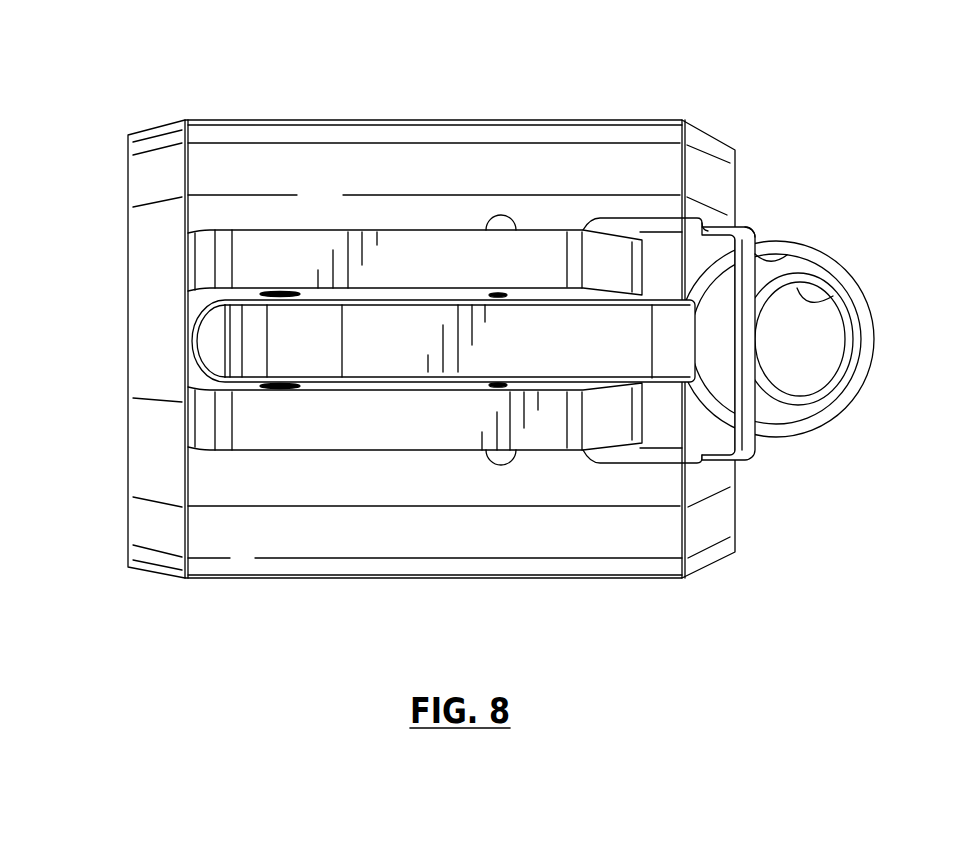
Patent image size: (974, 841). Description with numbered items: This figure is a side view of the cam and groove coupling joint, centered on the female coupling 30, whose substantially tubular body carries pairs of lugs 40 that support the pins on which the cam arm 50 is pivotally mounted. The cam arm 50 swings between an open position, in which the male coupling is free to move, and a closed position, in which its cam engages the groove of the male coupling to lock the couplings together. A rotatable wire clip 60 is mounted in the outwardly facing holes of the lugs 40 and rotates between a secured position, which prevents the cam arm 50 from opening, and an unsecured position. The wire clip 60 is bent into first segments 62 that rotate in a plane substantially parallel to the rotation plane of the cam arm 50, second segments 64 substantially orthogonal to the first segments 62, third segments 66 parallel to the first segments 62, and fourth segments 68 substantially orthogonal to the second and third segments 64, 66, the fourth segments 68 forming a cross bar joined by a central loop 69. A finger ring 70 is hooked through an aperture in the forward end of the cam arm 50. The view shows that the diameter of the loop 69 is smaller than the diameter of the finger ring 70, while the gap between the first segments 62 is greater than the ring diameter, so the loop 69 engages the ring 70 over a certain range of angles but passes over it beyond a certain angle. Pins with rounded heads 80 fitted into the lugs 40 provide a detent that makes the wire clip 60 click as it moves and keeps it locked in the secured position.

The female coupling 30 is at (597, 118).
The lugs 40 is at (455, 248).
The cam arm 50 is at (415, 325).
The rotatable wire clip 60 is at (757, 232).
The first segments 62 is at (657, 218).
The second segments 64 is at (730, 226).
The third segments 66 is at (750, 228).
The fourth segments 68 is at (787, 255).
The central loop 69 is at (836, 297).
The finger ring 70 is at (850, 394).
The pin heads 80 is at (499, 217).